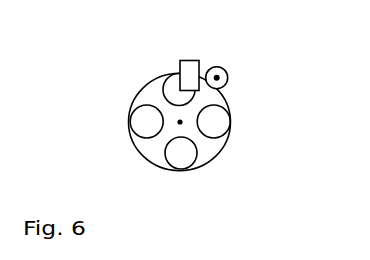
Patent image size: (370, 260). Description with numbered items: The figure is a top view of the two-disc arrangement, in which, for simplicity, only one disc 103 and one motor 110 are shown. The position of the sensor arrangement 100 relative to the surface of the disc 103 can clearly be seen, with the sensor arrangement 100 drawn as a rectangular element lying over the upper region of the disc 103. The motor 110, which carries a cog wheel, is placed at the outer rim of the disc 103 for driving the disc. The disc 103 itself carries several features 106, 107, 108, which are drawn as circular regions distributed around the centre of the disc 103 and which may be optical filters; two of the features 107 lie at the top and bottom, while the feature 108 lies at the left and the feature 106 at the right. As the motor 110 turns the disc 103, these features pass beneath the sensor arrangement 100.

The sensor arrangement 100 is at (200, 60).
The disc 103 is at (128, 97).
The feature 106 is at (212, 127).
The feature 107 is at (172, 97).
The feature 108 is at (138, 127).
The motor 110 is at (228, 77).